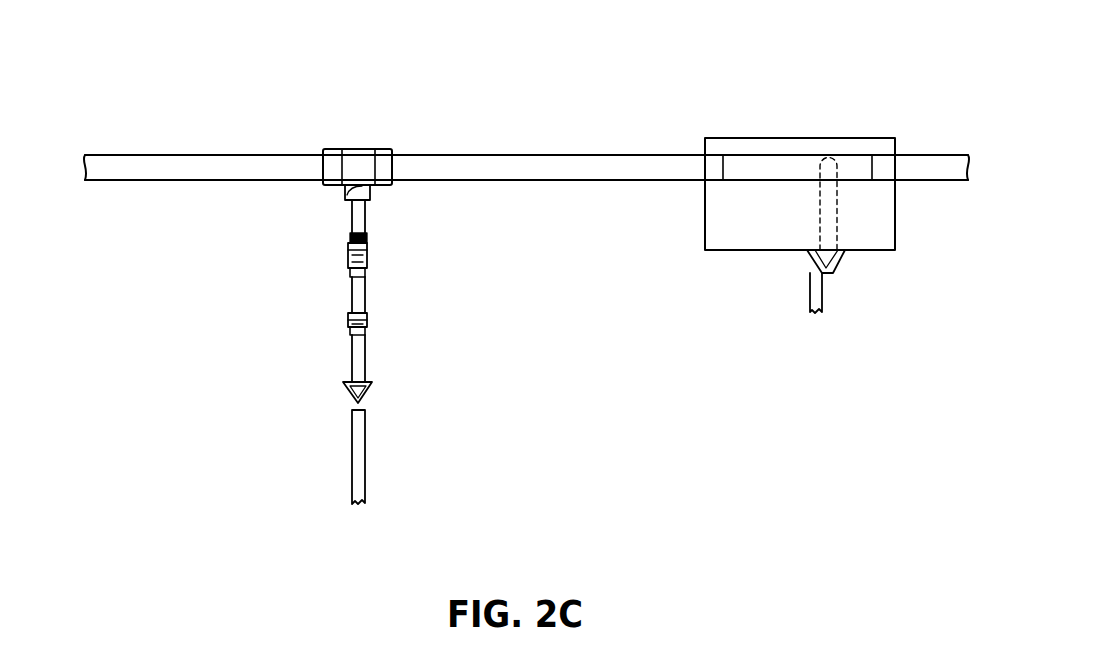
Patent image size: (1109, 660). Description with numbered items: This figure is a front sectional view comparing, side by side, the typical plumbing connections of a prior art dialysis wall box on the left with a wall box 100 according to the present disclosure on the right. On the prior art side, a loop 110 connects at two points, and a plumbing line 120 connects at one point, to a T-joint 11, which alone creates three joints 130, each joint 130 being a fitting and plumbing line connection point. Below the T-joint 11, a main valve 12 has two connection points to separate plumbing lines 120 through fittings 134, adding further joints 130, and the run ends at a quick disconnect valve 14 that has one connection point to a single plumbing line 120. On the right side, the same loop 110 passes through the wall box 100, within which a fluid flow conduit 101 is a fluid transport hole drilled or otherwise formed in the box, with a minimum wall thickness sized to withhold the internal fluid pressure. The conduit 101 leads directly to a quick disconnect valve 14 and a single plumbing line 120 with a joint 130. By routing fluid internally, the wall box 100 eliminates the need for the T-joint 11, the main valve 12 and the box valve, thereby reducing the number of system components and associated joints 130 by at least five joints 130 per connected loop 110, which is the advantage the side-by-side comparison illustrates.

The T-joint 11 is at (363, 160).
The main valve 12 is at (349, 257).
The quick disconnect valve 14 is at (368, 392).
The wall box 100 is at (770, 130).
The fluid flow conduit 101 is at (818, 235).
The loop 110 is at (485, 155).
The plumbing line 120 is at (361, 215).
The joint 130 is at (342, 163).
The fitting 134 is at (366, 262).